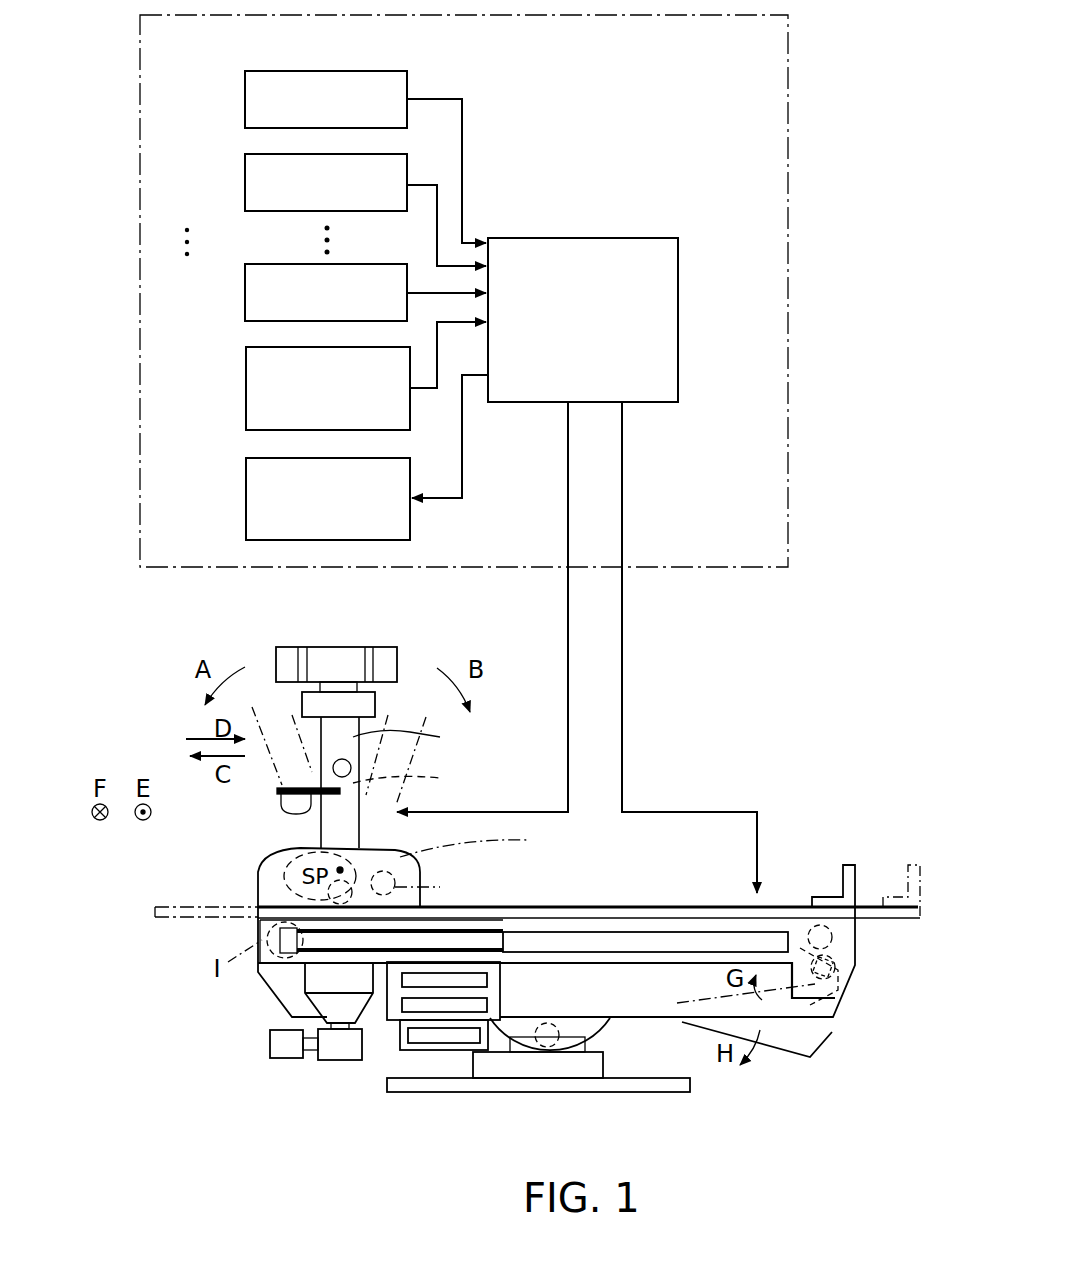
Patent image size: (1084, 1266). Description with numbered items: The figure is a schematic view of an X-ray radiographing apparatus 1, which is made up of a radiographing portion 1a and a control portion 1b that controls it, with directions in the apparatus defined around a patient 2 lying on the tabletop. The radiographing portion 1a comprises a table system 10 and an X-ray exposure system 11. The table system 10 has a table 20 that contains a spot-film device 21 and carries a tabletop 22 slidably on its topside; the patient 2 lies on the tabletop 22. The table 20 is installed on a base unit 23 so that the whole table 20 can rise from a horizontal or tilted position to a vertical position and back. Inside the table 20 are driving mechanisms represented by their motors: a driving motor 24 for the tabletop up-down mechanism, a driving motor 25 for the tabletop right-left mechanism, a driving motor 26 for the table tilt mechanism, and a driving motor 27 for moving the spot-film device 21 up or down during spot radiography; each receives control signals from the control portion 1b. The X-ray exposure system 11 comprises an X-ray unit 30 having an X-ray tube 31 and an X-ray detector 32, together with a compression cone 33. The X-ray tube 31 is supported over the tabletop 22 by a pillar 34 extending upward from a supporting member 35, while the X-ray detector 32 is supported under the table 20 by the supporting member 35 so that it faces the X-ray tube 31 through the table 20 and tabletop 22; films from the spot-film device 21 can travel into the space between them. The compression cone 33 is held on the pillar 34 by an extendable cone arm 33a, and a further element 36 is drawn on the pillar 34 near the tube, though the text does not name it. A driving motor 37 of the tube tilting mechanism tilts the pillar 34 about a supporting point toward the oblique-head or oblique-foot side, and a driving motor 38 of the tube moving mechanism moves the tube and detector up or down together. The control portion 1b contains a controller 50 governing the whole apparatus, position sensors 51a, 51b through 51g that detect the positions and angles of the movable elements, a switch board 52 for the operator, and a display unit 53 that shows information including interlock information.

The X-ray radiographing apparatus 1 is at (862, 513).
The radiographing portion 1a is at (682, 795).
The control portion 1b is at (788, 400).
The patient 2 is at (255, 860).
The table system 10 is at (818, 1066).
The X-ray exposure system 11 is at (170, 745).
The table 20 is at (757, 935).
The spot-film device 21 is at (478, 937).
The tabletop 22 is at (638, 905).
The base unit 23 is at (588, 1062).
The driving motor 24 is at (842, 960).
The driving motor 25 is at (850, 990).
The driving motor 26 is at (547, 1047).
The driving motor 27 is at (825, 1005).
The X-ray unit 30 is at (256, 655).
The X-ray tube 31 is at (321, 645).
The X-ray detector 32 is at (320, 1000).
The compression cone 33 is at (277, 800).
The cone arm 33a is at (300, 814).
The pillar 34 is at (362, 756).
The supporting member 35 is at (258, 890).
The thread take-up 36 is at (403, 777).
The driving motor 37 is at (380, 868).
The driving motor 38 is at (449, 867).
The controller 50 is at (623, 238).
The position sensor 51a is at (245, 102).
The position sensor 51b is at (245, 187).
The position sensor 51g is at (245, 296).
The switch board 52 is at (246, 394).
The display unit 53 is at (246, 504).